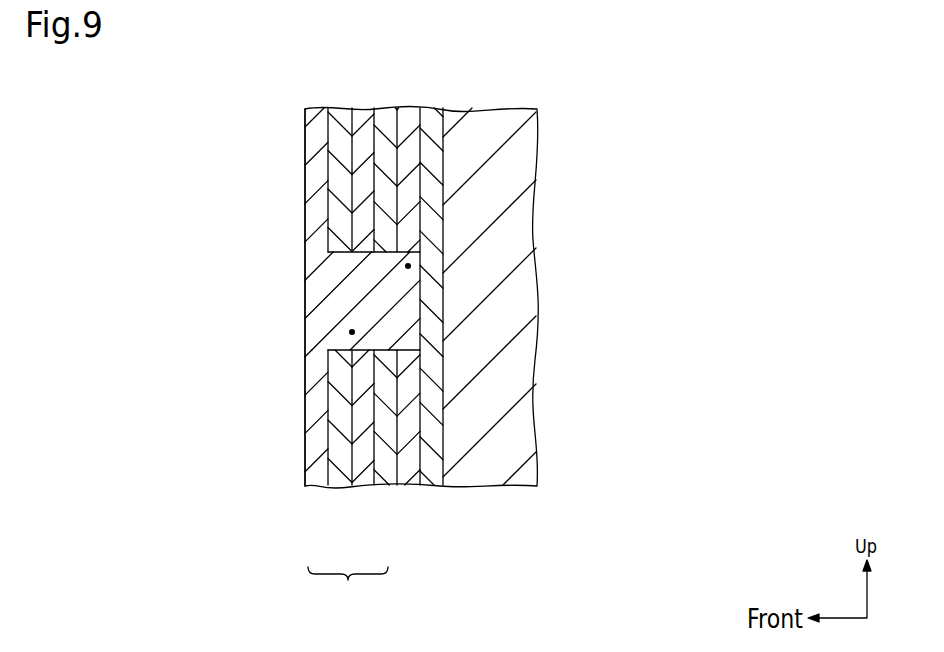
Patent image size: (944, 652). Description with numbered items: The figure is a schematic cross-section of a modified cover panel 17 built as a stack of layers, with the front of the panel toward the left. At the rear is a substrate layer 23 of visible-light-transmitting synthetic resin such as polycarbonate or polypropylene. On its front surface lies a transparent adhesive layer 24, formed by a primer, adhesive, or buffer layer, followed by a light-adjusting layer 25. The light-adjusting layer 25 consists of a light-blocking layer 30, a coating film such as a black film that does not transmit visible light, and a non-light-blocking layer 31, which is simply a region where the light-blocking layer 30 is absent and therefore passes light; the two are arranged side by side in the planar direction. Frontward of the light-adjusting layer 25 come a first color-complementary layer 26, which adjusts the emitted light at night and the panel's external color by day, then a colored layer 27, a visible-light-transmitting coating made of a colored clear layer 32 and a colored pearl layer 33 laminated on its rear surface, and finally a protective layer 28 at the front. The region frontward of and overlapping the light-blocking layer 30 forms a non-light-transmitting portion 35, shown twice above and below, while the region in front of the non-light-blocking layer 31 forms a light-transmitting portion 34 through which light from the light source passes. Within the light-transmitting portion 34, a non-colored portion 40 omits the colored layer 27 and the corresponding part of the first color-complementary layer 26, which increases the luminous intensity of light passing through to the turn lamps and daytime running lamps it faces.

The cover panel 17 is at (640, 92).
The substrate layer 23 is at (485, 482).
The adhesive layer 24 is at (433, 484).
The light-adjusting layer 25 is at (408, 488).
The first color-complementary layer 26 is at (387, 484).
The colored layer 27 is at (348, 589).
The protective layer 28 is at (317, 482).
The light-blocking layer 30 is at (405, 117).
The non-light-blocking layer 31 is at (408, 266).
The colored clear layer 32 is at (341, 484).
The colored pearl layer 33 is at (360, 484).
The light-transmitting portion 34 is at (305, 252).
The non-light-transmitting portion 35 is at (305, 109).
The non-colored portion 40 is at (352, 332).